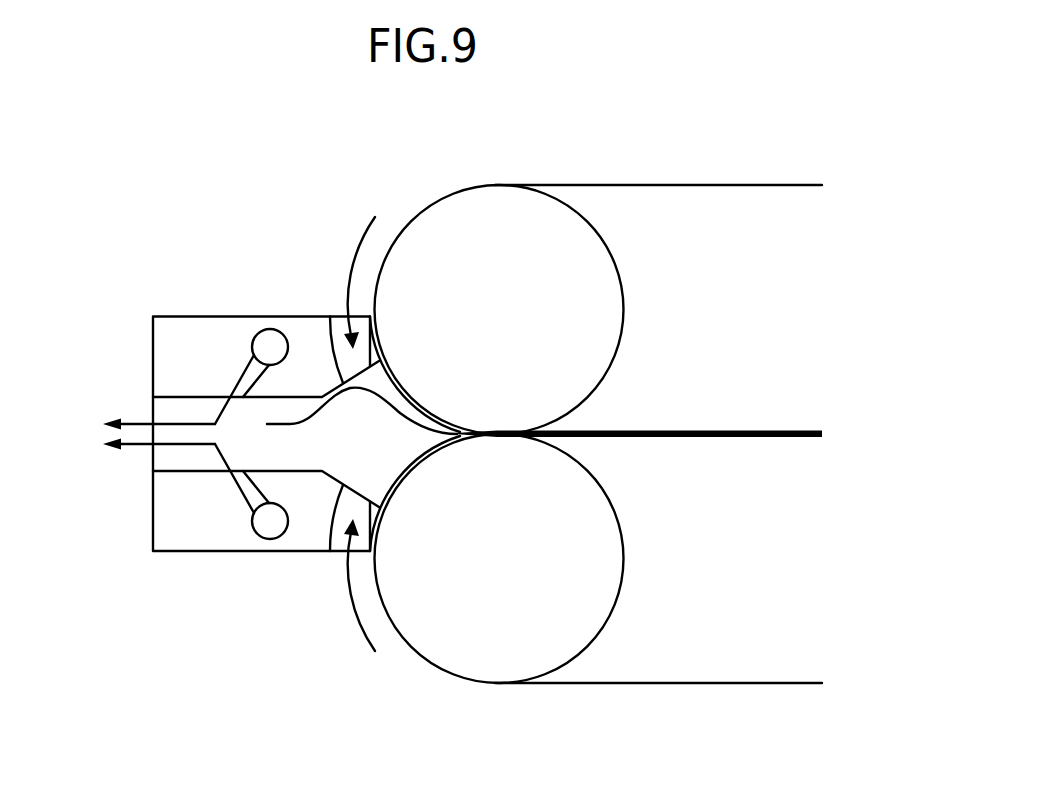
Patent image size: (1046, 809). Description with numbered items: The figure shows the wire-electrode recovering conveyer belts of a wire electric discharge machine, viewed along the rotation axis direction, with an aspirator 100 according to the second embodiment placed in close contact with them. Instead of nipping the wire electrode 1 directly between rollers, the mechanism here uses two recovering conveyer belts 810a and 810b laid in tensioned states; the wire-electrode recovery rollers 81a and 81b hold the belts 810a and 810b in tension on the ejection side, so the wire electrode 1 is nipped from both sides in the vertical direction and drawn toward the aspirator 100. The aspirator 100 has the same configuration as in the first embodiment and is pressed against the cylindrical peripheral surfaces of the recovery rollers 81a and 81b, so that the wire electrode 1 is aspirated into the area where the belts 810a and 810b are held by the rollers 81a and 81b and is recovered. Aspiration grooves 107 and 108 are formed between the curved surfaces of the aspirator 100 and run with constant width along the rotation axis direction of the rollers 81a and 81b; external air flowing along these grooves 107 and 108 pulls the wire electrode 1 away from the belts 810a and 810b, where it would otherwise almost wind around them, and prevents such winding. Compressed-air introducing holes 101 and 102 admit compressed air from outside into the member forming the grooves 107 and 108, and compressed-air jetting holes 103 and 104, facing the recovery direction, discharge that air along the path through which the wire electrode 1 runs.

The wire electrode 1 is at (781, 430).
The wire-electrode recovery roller 81a is at (500, 198).
The wire-electrode recovery roller 81b is at (499, 668).
The wire-electrode-recovering conveyer belt 810a is at (683, 183).
The wire-electrode-recovering conveyer belt 810b is at (727, 686).
The aspirator 100 is at (180, 335).
The compressed-air introducing hole 101 is at (268, 345).
The compressed-air introducing hole 102 is at (268, 523).
The compressed-air jetting hole 103 is at (252, 375).
The compressed-air jetting hole 104 is at (252, 493).
The aspiration groove 107 is at (340, 328).
The aspiration groove 108 is at (339, 539).